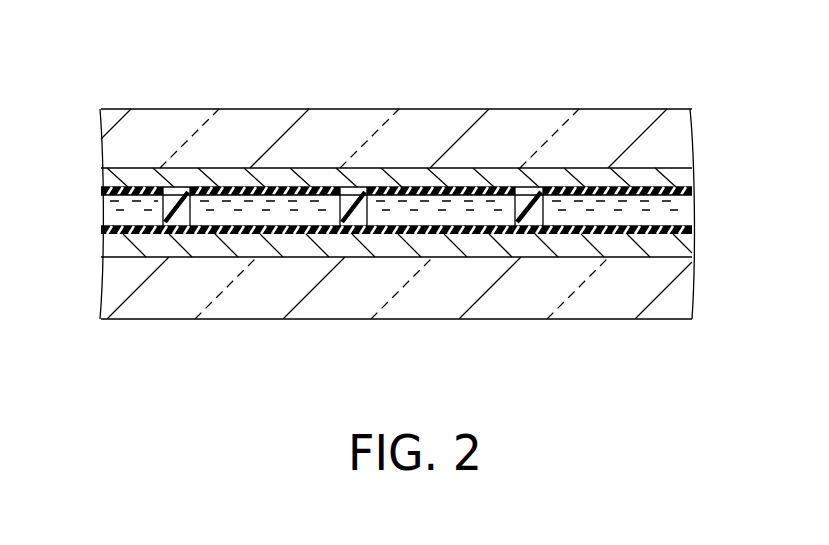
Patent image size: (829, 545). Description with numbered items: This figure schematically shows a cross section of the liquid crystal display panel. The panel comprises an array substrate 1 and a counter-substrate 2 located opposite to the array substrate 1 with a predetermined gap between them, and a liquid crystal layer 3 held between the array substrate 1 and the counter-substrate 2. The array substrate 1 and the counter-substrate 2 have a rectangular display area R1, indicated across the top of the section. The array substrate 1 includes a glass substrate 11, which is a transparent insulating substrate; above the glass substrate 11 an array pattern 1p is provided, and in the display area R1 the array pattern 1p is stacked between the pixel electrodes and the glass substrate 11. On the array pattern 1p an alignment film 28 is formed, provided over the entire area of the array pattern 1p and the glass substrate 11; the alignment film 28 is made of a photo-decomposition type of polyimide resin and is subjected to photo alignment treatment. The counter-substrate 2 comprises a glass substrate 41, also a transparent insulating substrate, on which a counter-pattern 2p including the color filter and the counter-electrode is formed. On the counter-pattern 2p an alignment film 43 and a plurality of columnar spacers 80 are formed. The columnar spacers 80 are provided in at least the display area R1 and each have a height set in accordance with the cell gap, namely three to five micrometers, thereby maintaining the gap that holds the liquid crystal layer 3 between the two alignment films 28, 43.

The array substrate 1 is at (93, 289).
The counter-substrate 2 is at (93, 147).
The liquid crystal layer 3 is at (108, 217).
The glass substrate 11 is at (682, 303).
The glass substrate 41 is at (676, 144).
The array pattern 1p is at (445, 248).
The counter-pattern 2p is at (430, 168).
The alignment film 28 is at (673, 226).
The alignment film 43 is at (106, 211).
The columnar spacers 80 is at (523, 340).
The display area R1 is at (692, 109).